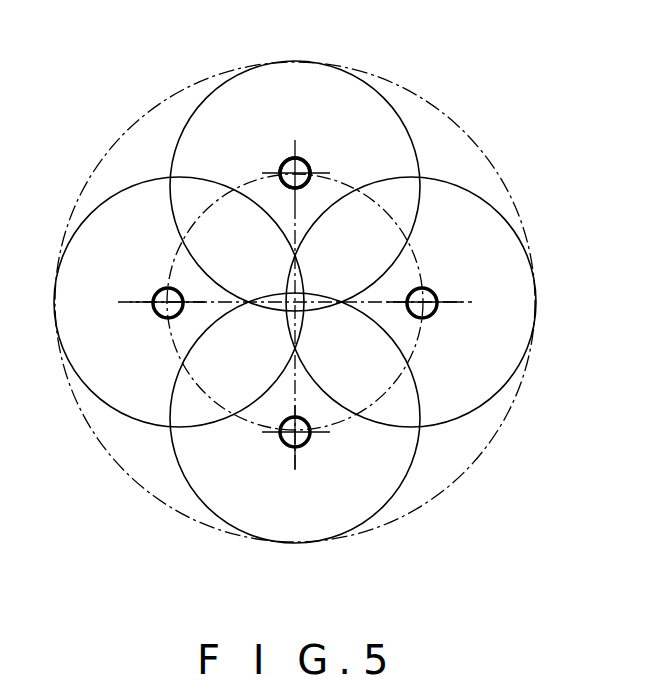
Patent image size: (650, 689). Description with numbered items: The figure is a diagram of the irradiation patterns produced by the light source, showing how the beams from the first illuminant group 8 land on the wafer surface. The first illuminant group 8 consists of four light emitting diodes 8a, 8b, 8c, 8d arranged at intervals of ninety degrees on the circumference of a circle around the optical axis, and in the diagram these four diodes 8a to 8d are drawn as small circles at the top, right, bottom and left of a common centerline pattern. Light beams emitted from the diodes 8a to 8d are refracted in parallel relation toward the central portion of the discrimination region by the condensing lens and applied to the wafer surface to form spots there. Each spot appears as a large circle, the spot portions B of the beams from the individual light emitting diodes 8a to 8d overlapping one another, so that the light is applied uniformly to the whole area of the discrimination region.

The first illuminant group 8 is at (303, 163).
The light emitting diode 8a is at (303, 168).
The light emitting diode 8b is at (430, 297).
The light emitting diode 8c is at (308, 446).
The light emitting diode 8d is at (163, 314).
The spot portions B is at (177, 138).